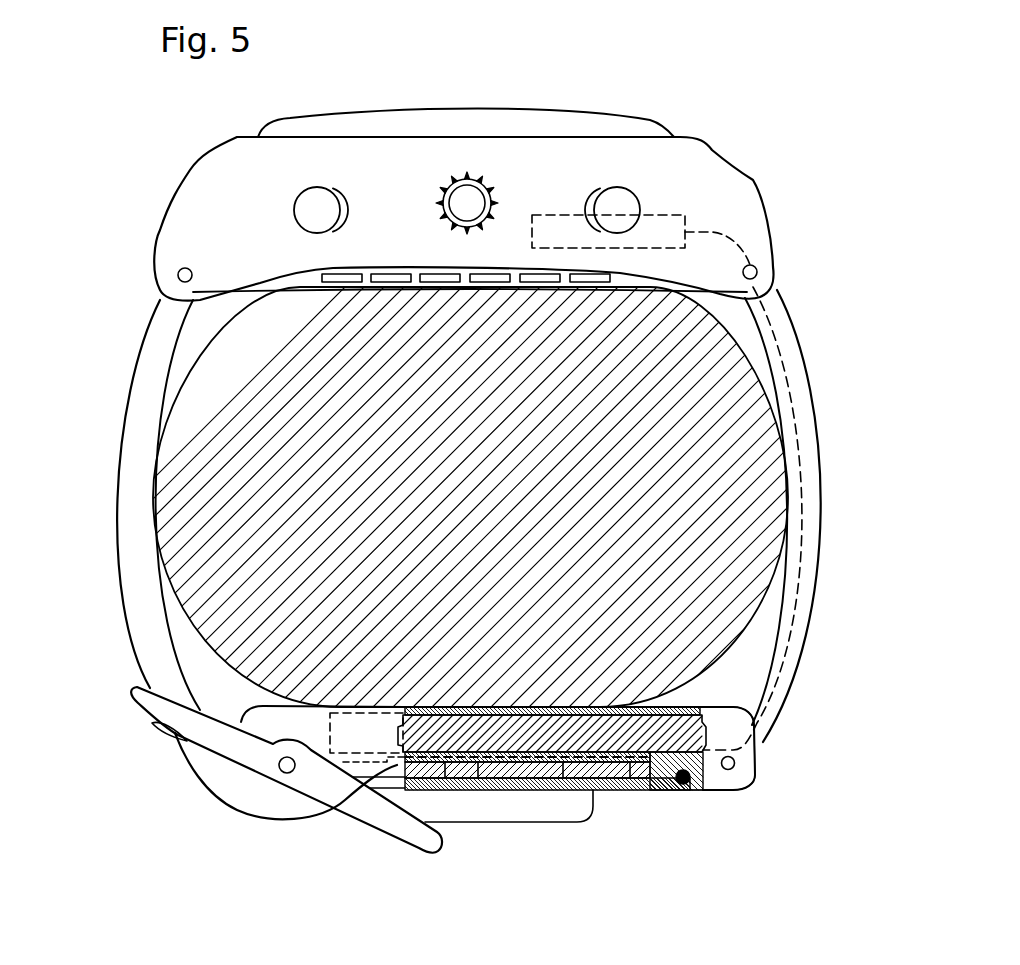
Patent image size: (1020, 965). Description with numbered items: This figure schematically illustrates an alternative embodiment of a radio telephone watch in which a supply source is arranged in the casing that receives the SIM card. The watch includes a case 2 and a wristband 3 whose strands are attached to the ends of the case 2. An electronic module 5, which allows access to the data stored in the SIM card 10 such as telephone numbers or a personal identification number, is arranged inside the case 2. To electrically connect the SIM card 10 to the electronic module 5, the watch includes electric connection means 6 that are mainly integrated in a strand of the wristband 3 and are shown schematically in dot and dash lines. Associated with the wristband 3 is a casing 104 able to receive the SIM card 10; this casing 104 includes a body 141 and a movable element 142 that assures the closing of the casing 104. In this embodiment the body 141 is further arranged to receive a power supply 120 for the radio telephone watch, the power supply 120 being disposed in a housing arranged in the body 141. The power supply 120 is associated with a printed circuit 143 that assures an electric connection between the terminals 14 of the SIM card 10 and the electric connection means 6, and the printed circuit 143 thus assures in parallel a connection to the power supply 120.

The case 2 is at (203, 207).
The wristband 3 is at (88, 487).
The electronic module 5 is at (665, 214).
The electric connection means 6 is at (803, 565).
The SIM card 10 is at (630, 789).
The terminals of SIM card 14 is at (535, 796).
The casing 104 is at (708, 820).
The power supply 120 is at (300, 790).
The body 141 is at (733, 777).
The movable element 142 is at (380, 773).
The printed circuit 143 is at (447, 789).